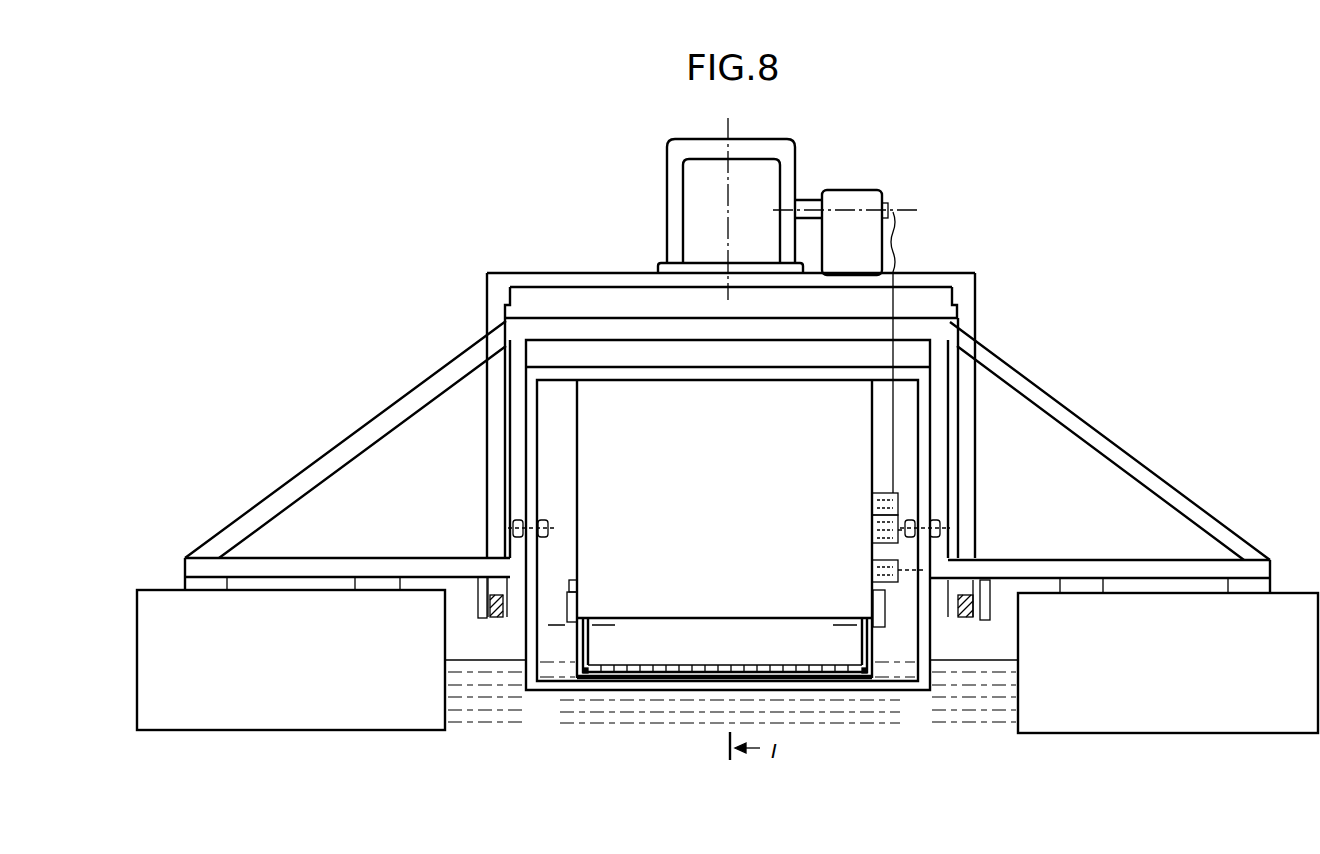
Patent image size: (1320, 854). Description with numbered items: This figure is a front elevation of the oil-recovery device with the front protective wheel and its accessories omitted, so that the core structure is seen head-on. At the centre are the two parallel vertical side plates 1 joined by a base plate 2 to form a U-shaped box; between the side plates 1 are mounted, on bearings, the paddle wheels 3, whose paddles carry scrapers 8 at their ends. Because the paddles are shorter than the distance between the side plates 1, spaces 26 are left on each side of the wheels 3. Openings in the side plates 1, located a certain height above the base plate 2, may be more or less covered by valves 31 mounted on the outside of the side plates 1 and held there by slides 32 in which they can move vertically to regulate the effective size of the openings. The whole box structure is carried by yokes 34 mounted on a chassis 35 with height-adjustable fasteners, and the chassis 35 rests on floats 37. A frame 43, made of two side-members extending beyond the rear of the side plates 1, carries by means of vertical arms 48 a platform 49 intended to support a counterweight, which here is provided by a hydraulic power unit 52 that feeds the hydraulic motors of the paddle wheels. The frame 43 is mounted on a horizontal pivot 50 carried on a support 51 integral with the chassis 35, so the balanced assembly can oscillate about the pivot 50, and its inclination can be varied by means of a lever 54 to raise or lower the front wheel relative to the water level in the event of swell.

The side plates 1 is at (577, 645).
The base plate 2 is at (672, 679).
The paddle wheels 3 is at (736, 644).
The scrapers 8 is at (808, 668).
The spaces 26 is at (587, 675).
The valves 31 is at (572, 580).
The slides 32 is at (574, 606).
The yokes 34 is at (383, 415).
The chassis 35 is at (519, 489).
The floats 37 is at (328, 666).
The frame 43 is at (504, 620).
The vertical arms 48 is at (486, 435).
The platform 49 is at (559, 284).
The horizontal pivot 50 is at (478, 603).
The support 51 is at (872, 560).
The hydraulic power unit 52 is at (682, 142).
The lever 54 is at (560, 522).